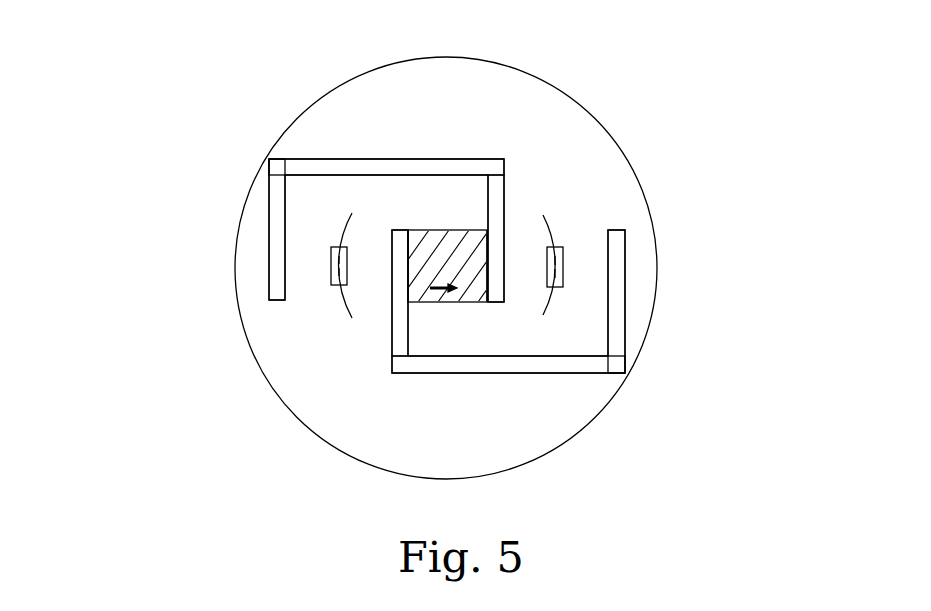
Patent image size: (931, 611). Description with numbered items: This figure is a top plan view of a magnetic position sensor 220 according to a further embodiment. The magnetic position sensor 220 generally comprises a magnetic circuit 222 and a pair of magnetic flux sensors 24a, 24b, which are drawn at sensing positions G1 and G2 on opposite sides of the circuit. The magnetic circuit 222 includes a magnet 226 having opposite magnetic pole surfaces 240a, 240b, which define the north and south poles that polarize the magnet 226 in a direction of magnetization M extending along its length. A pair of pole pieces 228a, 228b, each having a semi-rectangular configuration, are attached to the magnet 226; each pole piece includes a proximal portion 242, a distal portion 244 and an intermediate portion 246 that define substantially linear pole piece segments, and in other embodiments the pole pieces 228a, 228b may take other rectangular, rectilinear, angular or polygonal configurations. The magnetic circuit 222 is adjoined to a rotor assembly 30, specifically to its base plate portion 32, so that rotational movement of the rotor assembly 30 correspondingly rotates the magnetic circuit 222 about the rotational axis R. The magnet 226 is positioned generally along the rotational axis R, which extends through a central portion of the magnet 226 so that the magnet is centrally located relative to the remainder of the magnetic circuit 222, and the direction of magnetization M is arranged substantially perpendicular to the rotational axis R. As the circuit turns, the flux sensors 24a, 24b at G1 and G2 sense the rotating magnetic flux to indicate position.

The magnetic position sensor 220 is at (158, 171).
The magnetic circuit 222 is at (530, 123).
The magnet 226 is at (459, 212).
The pole piece 228a is at (343, 135).
The pole piece 228b is at (477, 402).
The magnetic pole surface 240a is at (488, 257).
The magnetic pole surface 240b is at (390, 318).
The proximal portion 242 is at (497, 240).
The distal portion 244 is at (280, 228).
The intermediate portion 246 is at (308, 182).
The magnetic flux sensor 24a is at (316, 272).
The magnetic flux sensor 24b is at (580, 276).
The rotor assembly 30 is at (630, 418).
The base plate portion 32 is at (374, 446).
The rotational axis R is at (450, 253).
The direction of magnetization M is at (448, 292).
The first sensor position G1 is at (372, 260).
The second sensor position G2 is at (587, 262).